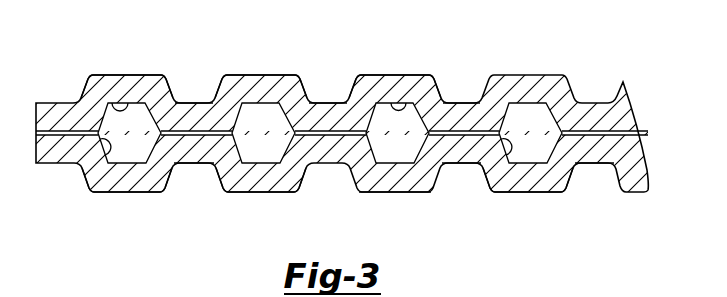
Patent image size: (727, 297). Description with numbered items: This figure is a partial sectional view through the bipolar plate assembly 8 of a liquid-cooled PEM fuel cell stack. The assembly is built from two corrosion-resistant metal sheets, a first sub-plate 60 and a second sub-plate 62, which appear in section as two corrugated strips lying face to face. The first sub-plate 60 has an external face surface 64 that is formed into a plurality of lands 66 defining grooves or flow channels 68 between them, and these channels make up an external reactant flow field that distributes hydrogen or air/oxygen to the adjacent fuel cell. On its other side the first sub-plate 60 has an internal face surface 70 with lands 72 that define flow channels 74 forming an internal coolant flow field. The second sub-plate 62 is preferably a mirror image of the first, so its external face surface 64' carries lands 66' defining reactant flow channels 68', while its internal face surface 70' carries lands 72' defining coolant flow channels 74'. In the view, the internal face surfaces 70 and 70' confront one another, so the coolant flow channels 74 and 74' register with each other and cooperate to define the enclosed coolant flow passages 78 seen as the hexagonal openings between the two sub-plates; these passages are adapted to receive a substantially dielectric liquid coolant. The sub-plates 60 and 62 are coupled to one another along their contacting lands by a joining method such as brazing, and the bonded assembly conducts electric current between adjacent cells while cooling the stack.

The bipolar plate assembly 8 is at (655, 88).
The first sub-plate 60 is at (529, 64).
The second sub-plate 62 is at (395, 196).
The external face surface 64 is at (387, 63).
The external face surface 64' is at (528, 215).
The lands 66 is at (194, 60).
The lands 66' is at (194, 211).
The flow channels 68 is at (388, 70).
The flow channels 68' is at (324, 201).
The internal face surface 70 is at (595, 199).
The internal face surface 70' is at (194, 74).
The lands 72 is at (338, 171).
The lands 72' is at (333, 99).
The flow channels 74 is at (235, 71).
The flow channels 74' is at (287, 193).
The coolant flow passages 78 is at (250, 142).